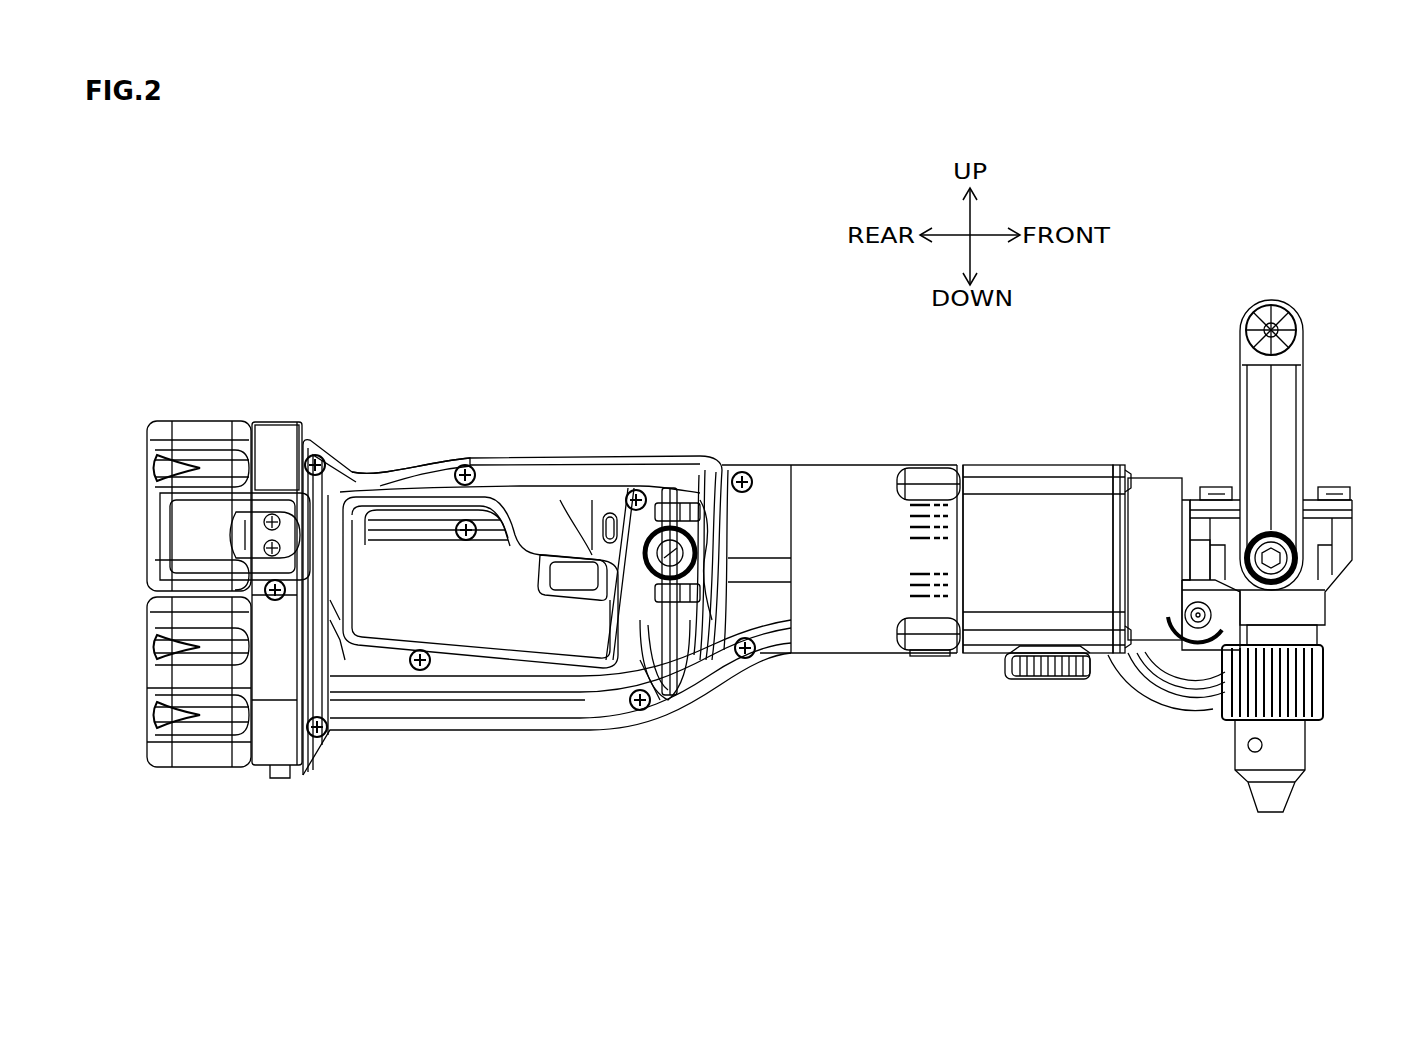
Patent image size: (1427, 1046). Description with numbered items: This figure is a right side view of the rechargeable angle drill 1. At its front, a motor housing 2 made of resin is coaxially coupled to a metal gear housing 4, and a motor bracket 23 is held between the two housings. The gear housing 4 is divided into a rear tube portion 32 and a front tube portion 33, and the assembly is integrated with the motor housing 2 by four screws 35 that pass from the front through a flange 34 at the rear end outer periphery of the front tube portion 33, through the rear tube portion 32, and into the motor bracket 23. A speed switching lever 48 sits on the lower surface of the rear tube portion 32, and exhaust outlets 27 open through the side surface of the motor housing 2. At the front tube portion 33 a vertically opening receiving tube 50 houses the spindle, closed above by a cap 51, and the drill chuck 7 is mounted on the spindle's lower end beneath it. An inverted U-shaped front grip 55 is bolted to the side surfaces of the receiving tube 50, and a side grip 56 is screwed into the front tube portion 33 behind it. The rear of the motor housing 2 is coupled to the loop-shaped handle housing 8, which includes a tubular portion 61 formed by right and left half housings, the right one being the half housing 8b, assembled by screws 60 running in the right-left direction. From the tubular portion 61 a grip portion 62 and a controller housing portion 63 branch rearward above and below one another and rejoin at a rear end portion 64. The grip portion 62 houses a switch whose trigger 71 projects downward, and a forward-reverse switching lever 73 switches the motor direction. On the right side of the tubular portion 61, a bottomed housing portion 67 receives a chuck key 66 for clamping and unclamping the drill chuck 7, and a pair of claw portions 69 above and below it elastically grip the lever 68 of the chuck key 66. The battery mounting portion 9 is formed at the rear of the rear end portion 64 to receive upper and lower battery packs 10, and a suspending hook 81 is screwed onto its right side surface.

The rechargeable angle drill 1 is at (1082, 358).
The motor housing 2 is at (817, 478).
The gear housing 4 is at (1158, 475).
The drill chuck 7 is at (1325, 684).
The handle housing 8 is at (517, 454).
The half housing 8b is at (402, 470).
The battery mounting portion 9 is at (275, 440).
The battery pack 10 is at (166, 430).
The motor bracket 23 is at (946, 500).
The exhaust outlet 27 is at (918, 500).
The rear tube portion 32 is at (1037, 505).
The front tube portion 33 is at (1170, 490).
The flange 34 is at (1120, 472).
The screw 35 is at (1130, 485).
The speed switching lever 48 is at (1042, 680).
The receiving tube 50 is at (1352, 550).
The cap 51 is at (1352, 496).
The front grip 55 is at (1271, 300).
The side grip 56 is at (1196, 668).
The screw 60 is at (316, 455).
The tubular portion 61 is at (777, 470).
The grip portion 62 is at (545, 470).
The controller housing portion 63 is at (522, 705).
The rear end portion 64 is at (338, 640).
The chuck key 66 is at (692, 510).
The housing portion 67 is at (714, 640).
The lever 68 is at (666, 665).
The claw portion 69 is at (672, 495).
The trigger 71 is at (575, 597).
The forward-reverse switching lever 73 is at (580, 555).
The hook 81 is at (204, 514).